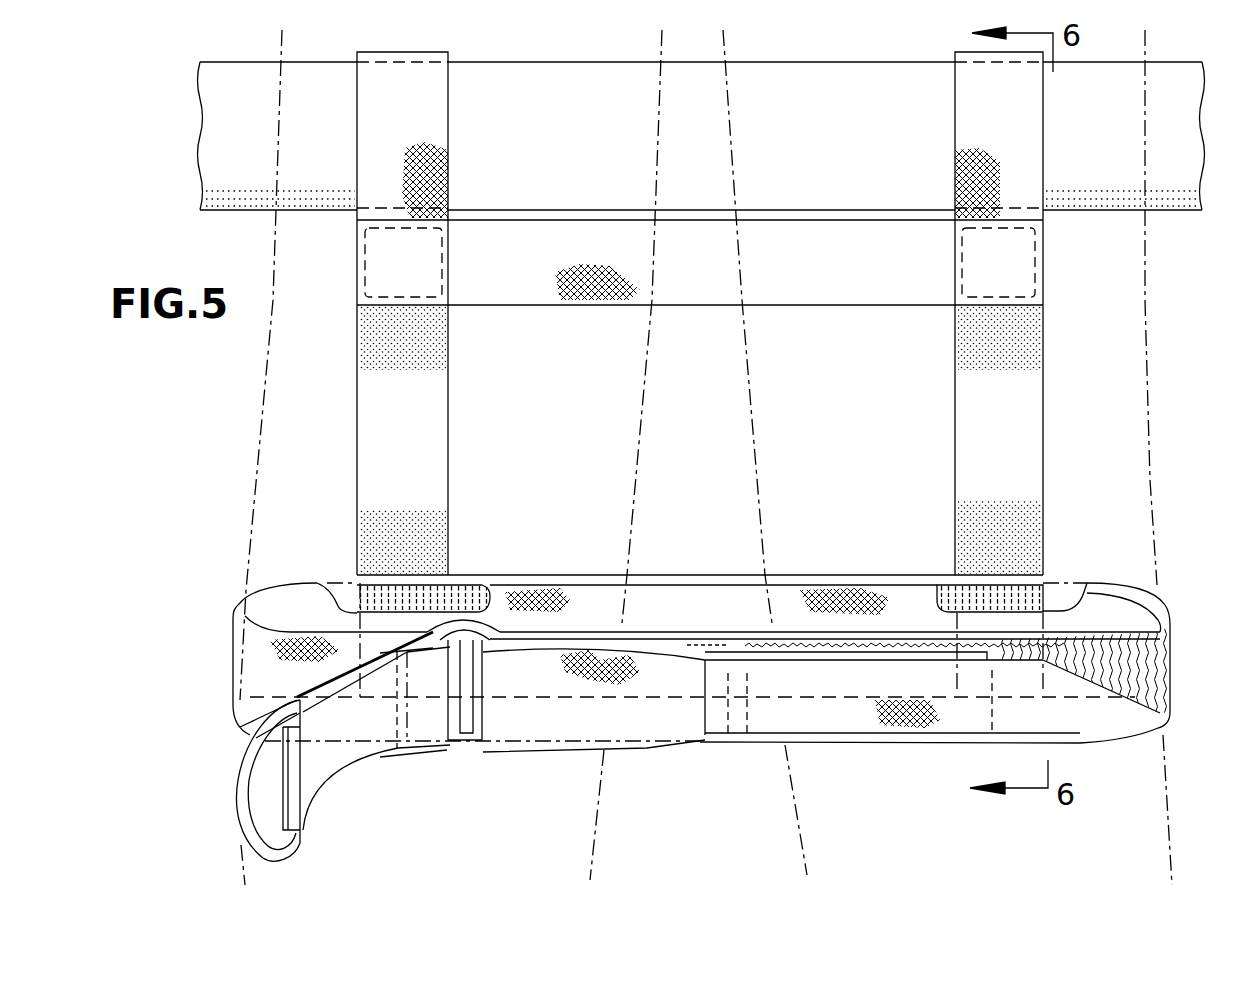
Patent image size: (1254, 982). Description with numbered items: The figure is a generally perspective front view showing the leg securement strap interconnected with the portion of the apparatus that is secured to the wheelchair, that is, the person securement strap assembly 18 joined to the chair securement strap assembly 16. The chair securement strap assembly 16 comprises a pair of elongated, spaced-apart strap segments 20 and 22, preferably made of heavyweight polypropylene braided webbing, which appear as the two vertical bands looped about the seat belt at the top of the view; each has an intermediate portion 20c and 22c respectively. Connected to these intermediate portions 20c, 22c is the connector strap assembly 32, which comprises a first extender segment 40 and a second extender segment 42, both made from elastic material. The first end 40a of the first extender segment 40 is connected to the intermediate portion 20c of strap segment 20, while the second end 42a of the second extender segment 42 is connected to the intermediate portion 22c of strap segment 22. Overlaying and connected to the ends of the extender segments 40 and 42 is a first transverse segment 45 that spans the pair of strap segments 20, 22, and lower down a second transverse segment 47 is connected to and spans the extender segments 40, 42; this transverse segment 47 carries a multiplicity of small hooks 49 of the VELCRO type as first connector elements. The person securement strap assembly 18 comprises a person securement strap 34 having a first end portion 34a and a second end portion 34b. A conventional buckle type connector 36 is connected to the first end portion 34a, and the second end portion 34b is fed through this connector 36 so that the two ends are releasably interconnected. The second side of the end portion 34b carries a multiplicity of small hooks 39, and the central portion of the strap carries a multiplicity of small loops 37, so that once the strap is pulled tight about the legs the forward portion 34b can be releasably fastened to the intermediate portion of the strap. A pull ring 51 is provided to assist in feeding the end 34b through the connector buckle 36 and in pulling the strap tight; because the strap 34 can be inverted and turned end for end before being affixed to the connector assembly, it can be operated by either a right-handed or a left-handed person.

The chair securement strap assembly 16 is at (407, 374).
The person securement strap assembly 18 is at (668, 760).
The first strap segment 20 is at (455, 167).
The intermediate portion of first strap segment 20c is at (433, 125).
The second strap segment 22 is at (942, 157).
The intermediate portion of second strap segment 22c is at (968, 128).
The connector strap assembly 32 is at (987, 372).
The person securement strap 34 is at (1103, 582).
The first end portion of person securement strap 34a is at (350, 758).
The second end portion of person securement strap 34b is at (845, 717).
The connector 36 is at (467, 753).
The small loops 37 is at (1160, 664).
The small hooks 39 is at (712, 641).
The first extender segment 40 is at (434, 354).
The first end of first extender segment 40a is at (395, 268).
The second extender segment 42 is at (963, 415).
The second end of second extender segment 42a is at (1000, 261).
The first transverse segment 45 is at (867, 288).
The second transverse segment 47 is at (558, 578).
The small hooks 49 is at (465, 598).
The pull ring 51 is at (240, 792).